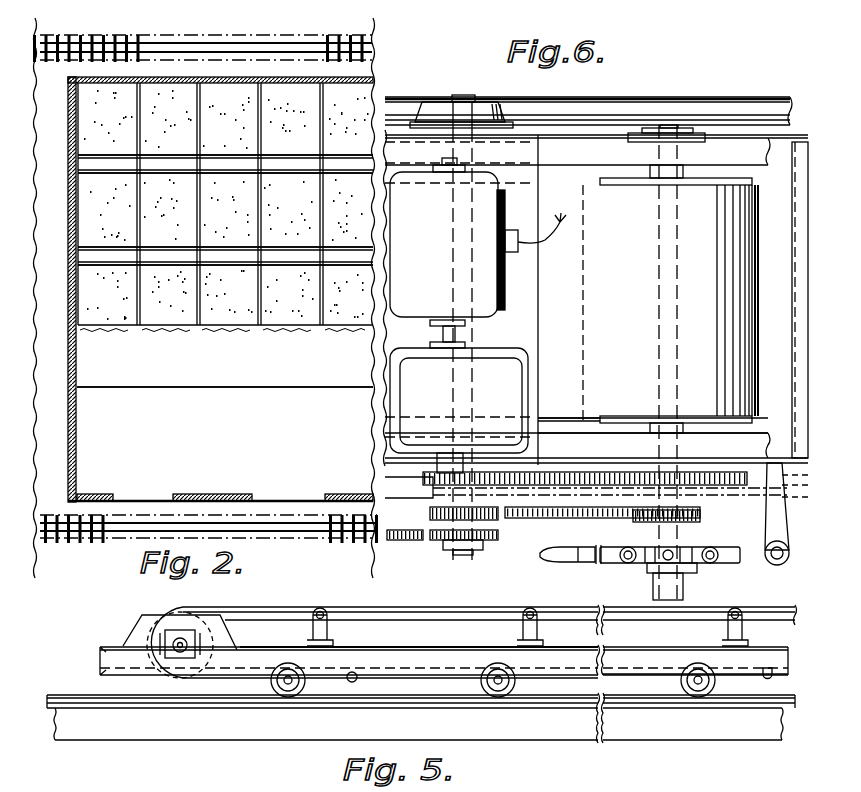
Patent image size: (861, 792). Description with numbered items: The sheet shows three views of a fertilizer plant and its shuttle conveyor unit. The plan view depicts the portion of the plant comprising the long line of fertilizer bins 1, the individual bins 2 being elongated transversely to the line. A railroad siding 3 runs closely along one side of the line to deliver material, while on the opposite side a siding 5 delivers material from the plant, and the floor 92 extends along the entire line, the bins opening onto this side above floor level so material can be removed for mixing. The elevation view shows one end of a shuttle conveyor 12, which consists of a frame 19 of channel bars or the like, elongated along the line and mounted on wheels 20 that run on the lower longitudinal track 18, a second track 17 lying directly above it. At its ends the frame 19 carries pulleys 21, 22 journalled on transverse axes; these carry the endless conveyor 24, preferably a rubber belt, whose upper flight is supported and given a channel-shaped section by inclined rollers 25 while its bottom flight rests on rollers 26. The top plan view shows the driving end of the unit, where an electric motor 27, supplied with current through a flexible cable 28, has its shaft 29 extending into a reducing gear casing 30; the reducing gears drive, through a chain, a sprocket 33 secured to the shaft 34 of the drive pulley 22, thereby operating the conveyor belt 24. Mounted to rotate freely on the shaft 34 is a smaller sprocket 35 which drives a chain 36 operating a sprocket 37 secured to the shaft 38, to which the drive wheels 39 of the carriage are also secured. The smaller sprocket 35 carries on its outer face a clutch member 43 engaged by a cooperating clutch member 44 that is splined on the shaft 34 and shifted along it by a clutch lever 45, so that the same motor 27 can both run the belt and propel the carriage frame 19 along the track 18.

In FIG. 2, the line of fertilizer bins 1 is at (175, 95).
In FIG. 2, the bins 2 is at (278, 103).
In FIG. 2, the railroad siding 3 is at (348, 35).
In FIG. 2, the siding 5 is at (358, 543).
In FIG. 5, the shuttle conveyor 12 is at (415, 655).
In FIG. 2, the track 17 is at (183, 267).
In FIG. 2, the track 18 is at (97, 153).
In FIG. 5, the track 18 is at (293, 733).
In FIG. 5, the frame 19 is at (120, 662).
In FIG. 5, the wheels 20 is at (273, 690).
In FIG. 5, the pulley 21 is at (157, 632).
In FIG. 6, the drive pulley 22 is at (585, 281).
In FIG. 6, the endless conveyor 24 is at (550, 417).
In FIG. 5, the endless conveyor 24 is at (340, 607).
In FIG. 5, the inclined rollers 25 is at (288, 613).
In FIG. 5, the rollers 26 is at (352, 682).
In FIG. 6, the electric motor 27 is at (392, 238).
In FIG. 6, the flexible cable 28 is at (538, 221).
In FIG. 6, the shaft 29 is at (455, 336).
In FIG. 6, the reducing gear casing 30 is at (523, 387).
In FIG. 6, the sprocket 33 is at (747, 483).
In FIG. 6, the shaft 34 is at (658, 280).
In FIG. 6, the smaller sprocket 35 is at (625, 513).
In FIG. 6, the chain 36 is at (537, 522).
In FIG. 6, the sprocket 37 is at (430, 515).
In FIG. 6, the shaft 38 is at (462, 95).
In FIG. 6, the drive wheels 39 is at (495, 102).
In FIG. 6, the clutch member 43 is at (690, 533).
In FIG. 6, the clutch member 44 is at (648, 547).
In FIG. 6, the clutch lever 45 is at (562, 562).
In FIG. 2, the floor 92 is at (340, 358).